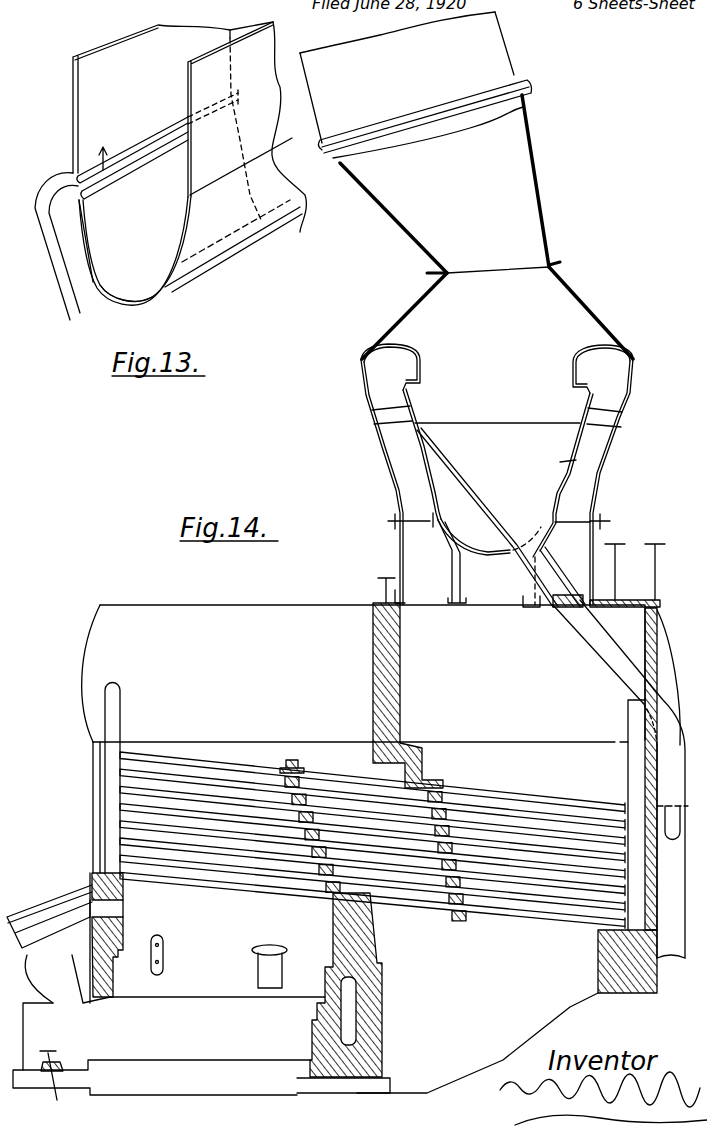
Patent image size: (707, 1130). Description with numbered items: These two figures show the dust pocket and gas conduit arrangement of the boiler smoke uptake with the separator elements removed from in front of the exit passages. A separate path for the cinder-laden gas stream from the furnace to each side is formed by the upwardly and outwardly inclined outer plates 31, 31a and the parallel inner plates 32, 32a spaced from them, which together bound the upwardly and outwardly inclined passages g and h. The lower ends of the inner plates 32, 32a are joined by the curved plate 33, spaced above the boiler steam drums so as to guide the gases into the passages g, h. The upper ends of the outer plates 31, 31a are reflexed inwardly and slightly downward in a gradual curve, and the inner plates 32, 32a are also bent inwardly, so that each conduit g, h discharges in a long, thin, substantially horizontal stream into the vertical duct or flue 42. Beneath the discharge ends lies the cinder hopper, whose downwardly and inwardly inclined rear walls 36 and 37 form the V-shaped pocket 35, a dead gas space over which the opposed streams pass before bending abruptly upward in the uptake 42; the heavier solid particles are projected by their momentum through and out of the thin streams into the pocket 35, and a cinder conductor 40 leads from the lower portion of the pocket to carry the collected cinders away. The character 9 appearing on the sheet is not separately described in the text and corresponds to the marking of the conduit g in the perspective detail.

In FIG. 13, the vertical duct or flue 42 is at (118, 100).
In FIG. 14, the vertical duct or flue 42 is at (527, 342).
In FIG. 13, the plate (hairpin bend) 9 is at (48, 246).
In FIG. 14, the plate (hairpin bend) 9 is at (388, 474).
In FIG. 13, the passage g is at (58, 268).
In FIG. 14, the passage g is at (400, 458).
In FIG. 13, the outer plate 31 is at (60, 293).
In FIG. 14, the outer plate 31 is at (377, 438).
In FIG. 13, the inner plate 32 is at (92, 303).
In FIG. 14, the inner plate 32 is at (417, 470).
In FIG. 13, the curved plate 33 is at (128, 302).
In FIG. 14, the curved plate 33 is at (470, 545).
In FIG. 14, the rear wall 36 is at (462, 492).
In FIG. 14, the V-shaped pocket 35 is at (497, 514).
In FIG. 14, the rear wall 37 is at (550, 501).
In FIG. 14, the cinder conductor 40 is at (555, 570).
In FIG. 14, the outer plate 31a is at (620, 430).
In FIG. 14, the inner plate 32a is at (567, 478).
In FIG. 14, the passage h is at (587, 468).